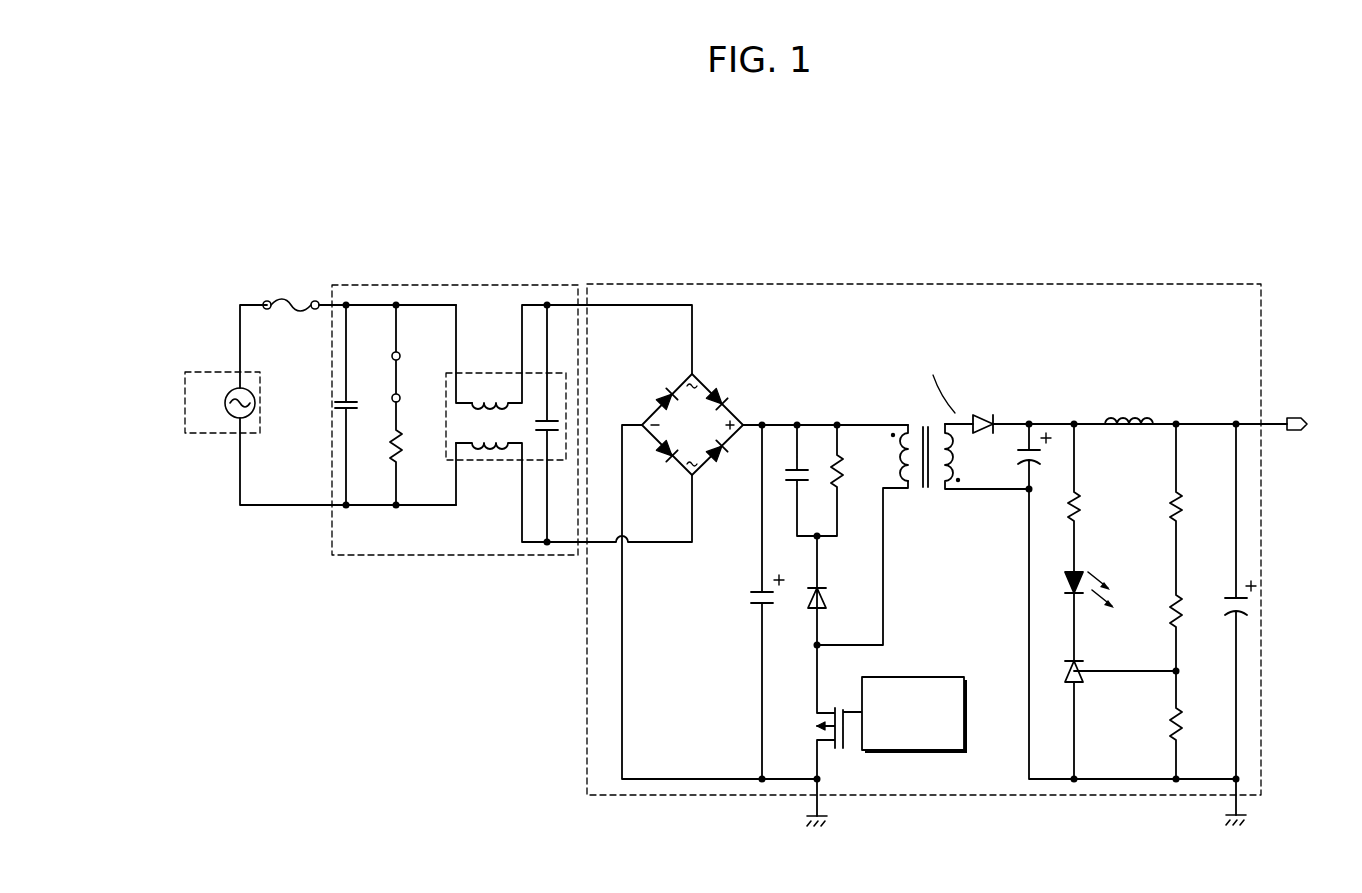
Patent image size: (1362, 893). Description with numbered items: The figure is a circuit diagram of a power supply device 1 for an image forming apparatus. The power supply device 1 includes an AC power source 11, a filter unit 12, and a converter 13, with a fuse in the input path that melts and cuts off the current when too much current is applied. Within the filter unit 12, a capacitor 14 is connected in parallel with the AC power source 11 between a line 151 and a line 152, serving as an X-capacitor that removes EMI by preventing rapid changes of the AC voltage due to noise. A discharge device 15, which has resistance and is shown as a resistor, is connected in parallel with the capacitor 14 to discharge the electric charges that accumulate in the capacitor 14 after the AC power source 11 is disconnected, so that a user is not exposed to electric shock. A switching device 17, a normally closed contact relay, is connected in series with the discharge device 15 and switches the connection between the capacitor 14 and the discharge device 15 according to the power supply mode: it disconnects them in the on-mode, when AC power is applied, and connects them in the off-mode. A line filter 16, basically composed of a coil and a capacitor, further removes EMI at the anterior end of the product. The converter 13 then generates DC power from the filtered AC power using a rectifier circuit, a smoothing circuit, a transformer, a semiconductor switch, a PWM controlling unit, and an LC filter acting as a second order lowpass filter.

The power supply device 1 is at (1050, 226).
The AC power source 11 is at (218, 367).
The filter unit 12 is at (490, 283).
The converter 13 is at (962, 283).
The capacitor 14 is at (350, 398).
The discharge device 15 is at (401, 452).
The line filter 16 is at (477, 372).
The switching device 17 is at (399, 377).
The line 151 is at (378, 301).
The line 152 is at (288, 511).